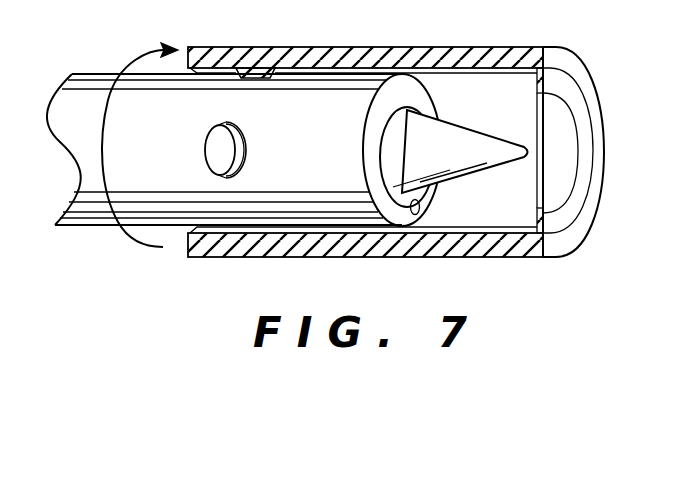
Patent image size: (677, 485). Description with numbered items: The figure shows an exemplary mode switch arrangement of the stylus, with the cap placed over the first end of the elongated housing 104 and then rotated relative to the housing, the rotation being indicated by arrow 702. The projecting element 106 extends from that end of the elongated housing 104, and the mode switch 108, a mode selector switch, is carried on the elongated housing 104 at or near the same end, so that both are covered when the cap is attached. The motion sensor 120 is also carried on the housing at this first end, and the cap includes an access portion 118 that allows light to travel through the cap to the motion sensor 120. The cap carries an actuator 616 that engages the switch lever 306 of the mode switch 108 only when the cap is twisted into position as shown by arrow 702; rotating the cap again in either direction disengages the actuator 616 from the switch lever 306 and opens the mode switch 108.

The elongated housing 104 is at (97, 73).
The projecting element 106 is at (458, 138).
The mode switch 108 is at (246, 150).
The access portion 118 is at (598, 152).
The motion sensor 120 is at (420, 210).
The switch lever 306 is at (207, 148).
The actuator 616 is at (262, 76).
The arrow 702 is at (132, 244).